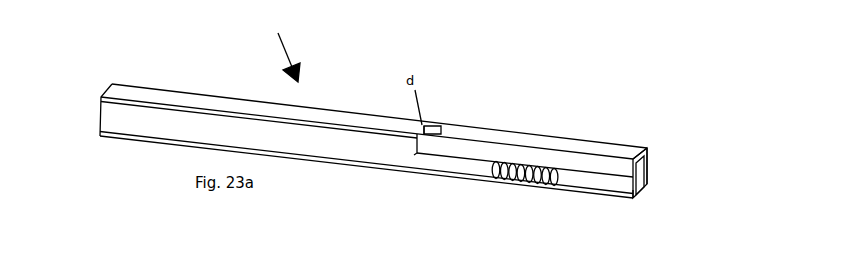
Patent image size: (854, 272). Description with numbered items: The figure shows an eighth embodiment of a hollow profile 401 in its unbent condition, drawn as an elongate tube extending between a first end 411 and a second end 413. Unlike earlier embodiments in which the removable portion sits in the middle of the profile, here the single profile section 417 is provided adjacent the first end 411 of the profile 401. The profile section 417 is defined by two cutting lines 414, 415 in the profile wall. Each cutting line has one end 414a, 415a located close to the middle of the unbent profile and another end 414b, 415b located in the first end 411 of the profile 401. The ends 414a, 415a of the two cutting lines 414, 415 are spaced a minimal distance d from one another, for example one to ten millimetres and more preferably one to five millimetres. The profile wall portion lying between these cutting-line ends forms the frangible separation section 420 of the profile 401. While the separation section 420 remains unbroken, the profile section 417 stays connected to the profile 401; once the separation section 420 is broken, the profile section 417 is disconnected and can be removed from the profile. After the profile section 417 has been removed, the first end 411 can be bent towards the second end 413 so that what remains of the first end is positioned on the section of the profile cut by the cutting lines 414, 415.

The hollow profile 401 is at (282, 45).
The first end of the profile 411 is at (640, 193).
The second end of the profile 413 is at (100, 117).
The cutting line 414 is at (463, 160).
The end of cutting line 414a is at (417, 133).
The end of cutting line 414b is at (637, 189).
The cutting line 415 is at (648, 163).
The end of cutting line 415a is at (428, 125).
The end of cutting line 415b is at (648, 171).
The profile section 417 is at (518, 149).
The frangible separation section 420 is at (443, 130).